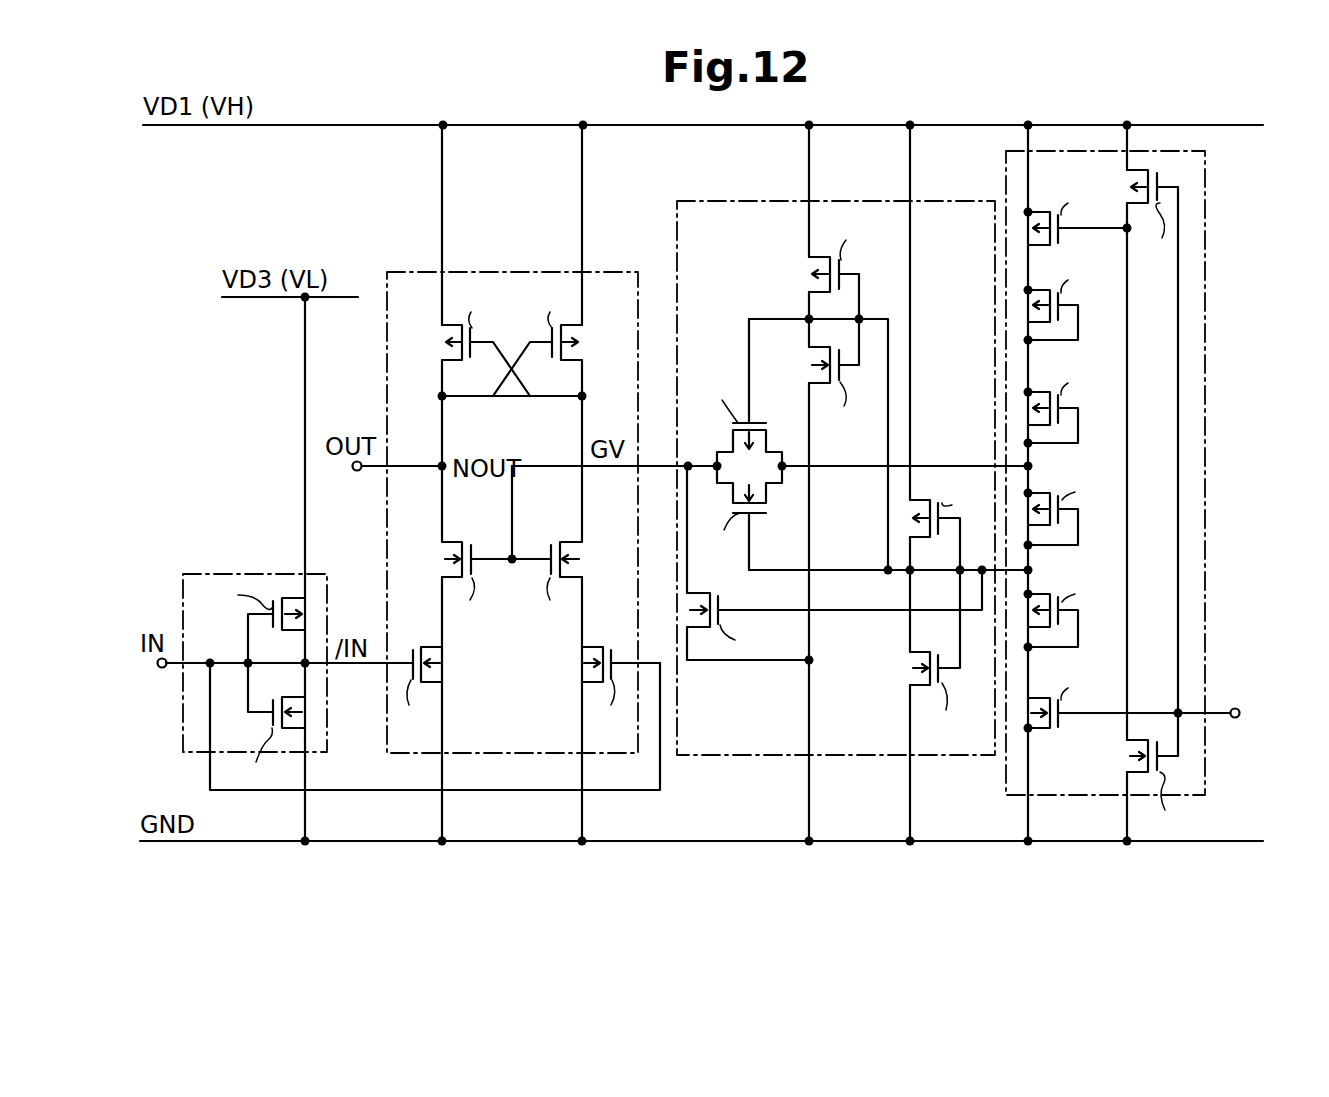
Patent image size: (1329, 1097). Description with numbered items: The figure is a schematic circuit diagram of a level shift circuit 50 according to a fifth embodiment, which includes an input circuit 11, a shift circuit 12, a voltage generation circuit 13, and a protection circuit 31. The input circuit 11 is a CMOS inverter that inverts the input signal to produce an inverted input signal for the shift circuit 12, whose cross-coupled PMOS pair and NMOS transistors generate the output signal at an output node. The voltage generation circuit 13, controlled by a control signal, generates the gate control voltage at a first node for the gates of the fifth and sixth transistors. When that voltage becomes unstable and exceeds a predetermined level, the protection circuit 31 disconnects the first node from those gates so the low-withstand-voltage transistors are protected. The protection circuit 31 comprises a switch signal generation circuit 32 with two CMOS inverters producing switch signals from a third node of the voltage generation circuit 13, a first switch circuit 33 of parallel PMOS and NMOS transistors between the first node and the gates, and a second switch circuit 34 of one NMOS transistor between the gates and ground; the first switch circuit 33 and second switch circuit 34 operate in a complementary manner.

The input circuit 11 is at (250, 572).
The shift circuit 12 is at (410, 268).
The voltage generation circuit 13 is at (1205, 215).
The protection circuit 31 is at (738, 200).
The switch signal generation circuit 32 is at (886, 640).
The first switch circuit 33 is at (730, 343).
The second switch circuit 34 is at (711, 679).
The level shift circuit 50 is at (1252, 174).